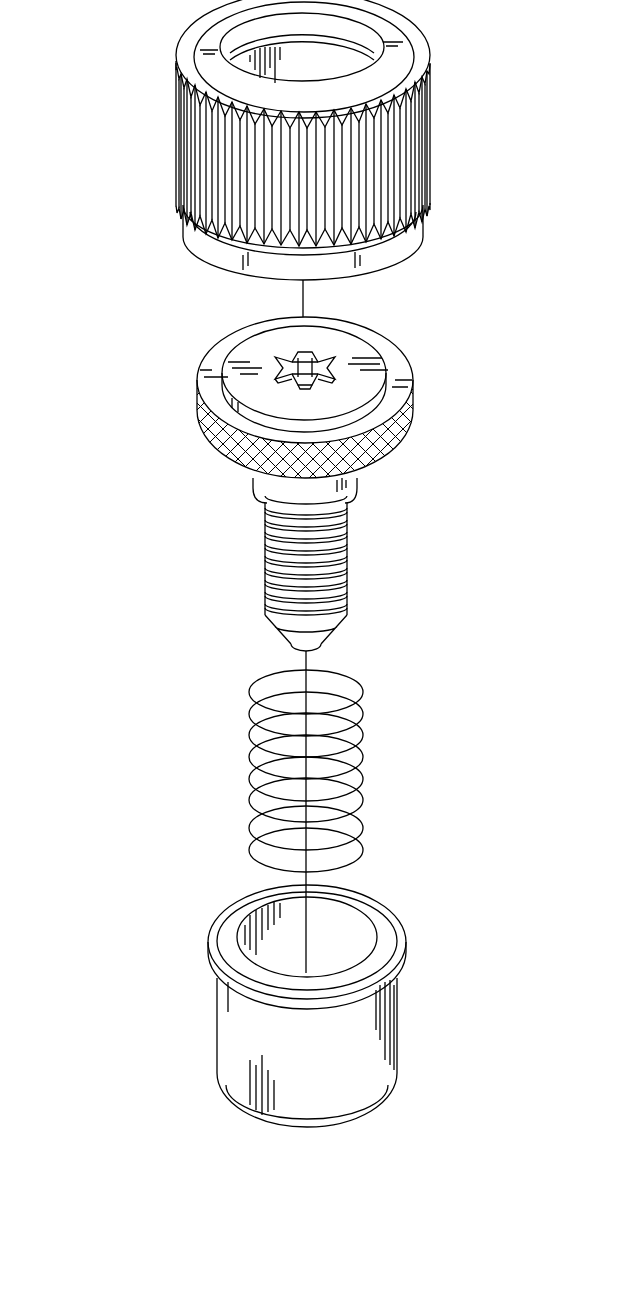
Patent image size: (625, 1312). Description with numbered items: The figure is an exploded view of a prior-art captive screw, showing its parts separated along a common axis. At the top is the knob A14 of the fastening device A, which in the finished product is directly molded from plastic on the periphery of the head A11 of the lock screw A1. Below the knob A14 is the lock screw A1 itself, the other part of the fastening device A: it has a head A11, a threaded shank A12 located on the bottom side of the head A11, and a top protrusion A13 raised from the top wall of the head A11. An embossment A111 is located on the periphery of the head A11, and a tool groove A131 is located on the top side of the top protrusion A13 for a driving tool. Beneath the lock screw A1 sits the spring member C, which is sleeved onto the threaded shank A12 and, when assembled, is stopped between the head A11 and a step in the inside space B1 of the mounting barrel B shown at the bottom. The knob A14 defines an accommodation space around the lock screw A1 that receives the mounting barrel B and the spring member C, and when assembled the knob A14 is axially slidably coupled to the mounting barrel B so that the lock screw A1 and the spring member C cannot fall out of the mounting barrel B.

The fastening device A is at (152, 246).
The lock screw A1 is at (382, 500).
The head A11 is at (402, 375).
The embossment A111 is at (395, 433).
The threaded shank A12 is at (275, 490).
The top protrusion A13 is at (350, 348).
The tool groove A131 is at (293, 362).
The knob A14 is at (450, 136).
The mounting barrel B is at (230, 1017).
The inside space B1 is at (344, 940).
The spring member C is at (362, 772).